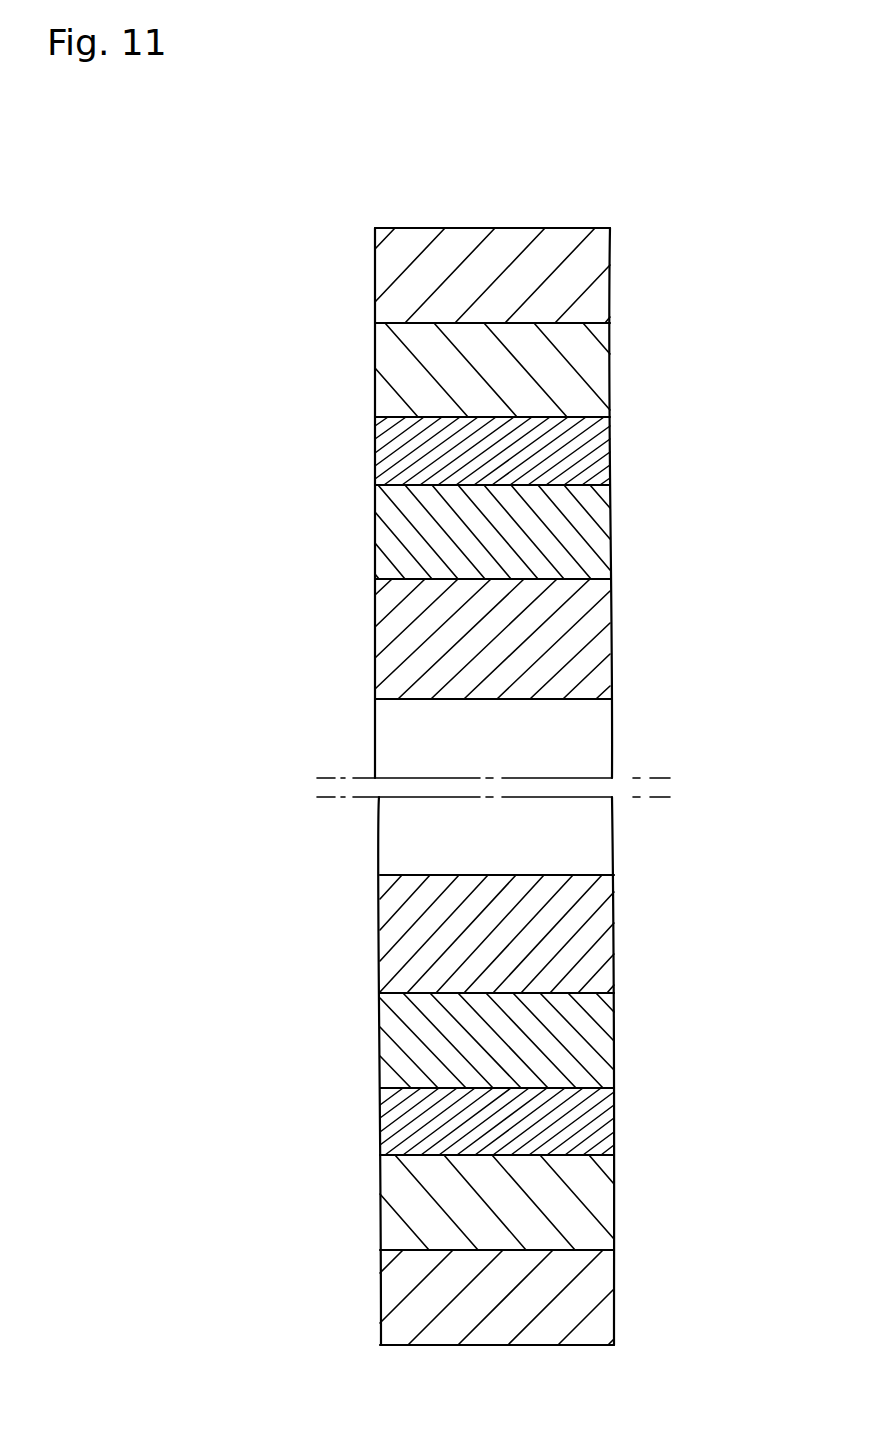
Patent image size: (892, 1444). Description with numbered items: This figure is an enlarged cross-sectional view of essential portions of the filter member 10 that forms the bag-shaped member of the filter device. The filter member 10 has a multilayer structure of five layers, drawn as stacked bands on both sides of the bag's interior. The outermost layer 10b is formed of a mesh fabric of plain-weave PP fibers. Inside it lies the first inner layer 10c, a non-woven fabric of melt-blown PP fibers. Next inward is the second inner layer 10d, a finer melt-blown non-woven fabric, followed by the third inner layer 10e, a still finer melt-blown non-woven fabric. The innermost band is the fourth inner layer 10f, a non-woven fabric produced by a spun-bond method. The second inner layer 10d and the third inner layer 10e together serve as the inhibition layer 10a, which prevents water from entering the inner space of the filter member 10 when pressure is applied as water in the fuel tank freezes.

The filter member 10 is at (475, 208).
The inhibition layer 10a is at (727, 432).
The outermost layer 10b is at (593, 298).
The first inner layer 10c is at (602, 382).
The second inner layer 10d is at (600, 468).
The third inner layer 10e is at (598, 538).
The fourth inner layer 10f is at (584, 652).